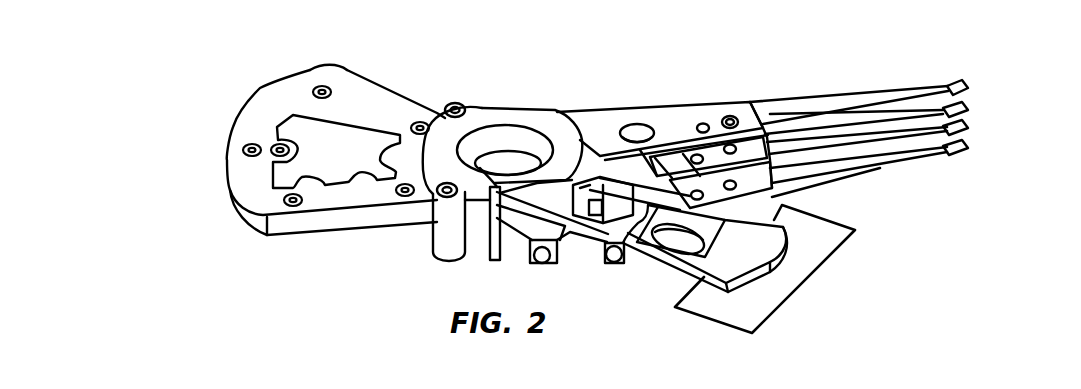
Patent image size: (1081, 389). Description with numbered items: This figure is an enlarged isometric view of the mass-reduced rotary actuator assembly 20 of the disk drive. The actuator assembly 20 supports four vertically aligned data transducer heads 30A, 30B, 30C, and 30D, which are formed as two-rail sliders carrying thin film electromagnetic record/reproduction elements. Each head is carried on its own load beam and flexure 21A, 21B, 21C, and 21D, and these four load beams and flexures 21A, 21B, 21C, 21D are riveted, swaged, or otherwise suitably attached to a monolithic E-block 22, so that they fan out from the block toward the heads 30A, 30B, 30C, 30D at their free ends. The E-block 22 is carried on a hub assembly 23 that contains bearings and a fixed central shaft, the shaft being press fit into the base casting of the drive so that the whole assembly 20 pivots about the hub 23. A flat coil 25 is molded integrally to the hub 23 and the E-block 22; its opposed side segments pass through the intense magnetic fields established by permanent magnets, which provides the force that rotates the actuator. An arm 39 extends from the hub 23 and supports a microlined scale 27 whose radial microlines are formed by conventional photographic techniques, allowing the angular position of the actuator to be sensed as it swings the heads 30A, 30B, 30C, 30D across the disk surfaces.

The rotary actuator assembly 20 is at (414, 280).
The load beam and flexure 21A is at (783, 110).
The load beam and flexure 21B is at (873, 120).
The load beam and flexure 21C is at (797, 160).
The load beam and flexure 21D is at (892, 165).
The E-block 22 is at (627, 112).
The hub assembly 23 is at (510, 132).
The flat coil 25 is at (262, 122).
The microlined scale 27 is at (800, 275).
The data transducer head 30A is at (965, 85).
The data transducer head 30B is at (967, 110).
The data transducer head 30C is at (967, 130).
The data transducer head 30D is at (968, 152).
The arm 39 is at (653, 260).